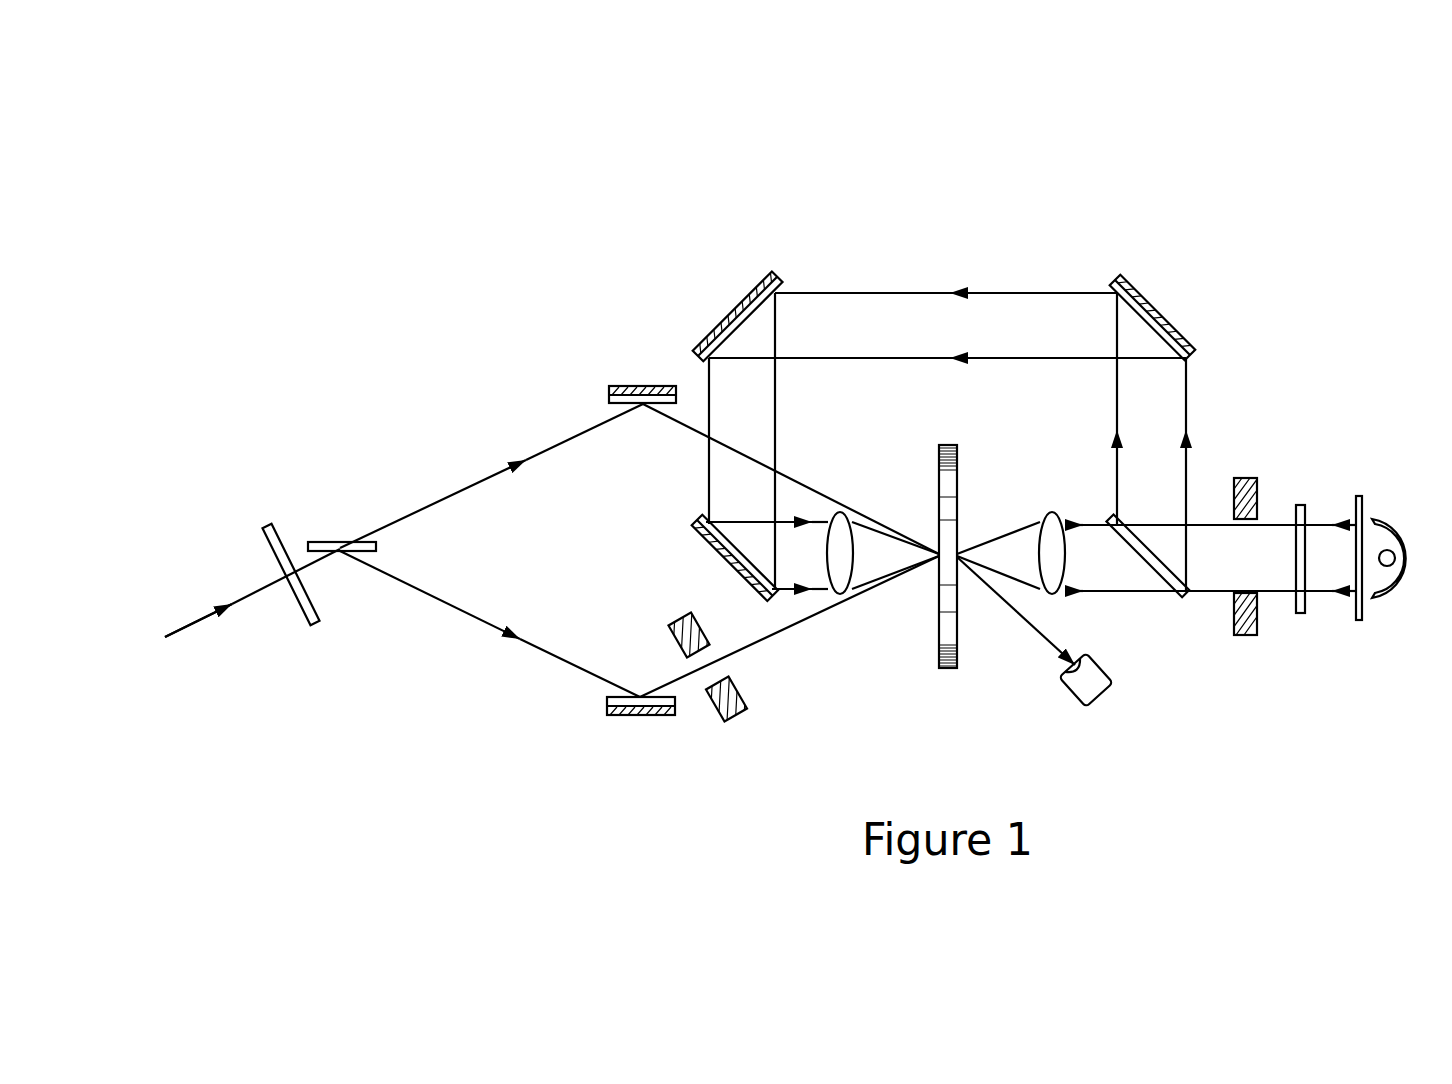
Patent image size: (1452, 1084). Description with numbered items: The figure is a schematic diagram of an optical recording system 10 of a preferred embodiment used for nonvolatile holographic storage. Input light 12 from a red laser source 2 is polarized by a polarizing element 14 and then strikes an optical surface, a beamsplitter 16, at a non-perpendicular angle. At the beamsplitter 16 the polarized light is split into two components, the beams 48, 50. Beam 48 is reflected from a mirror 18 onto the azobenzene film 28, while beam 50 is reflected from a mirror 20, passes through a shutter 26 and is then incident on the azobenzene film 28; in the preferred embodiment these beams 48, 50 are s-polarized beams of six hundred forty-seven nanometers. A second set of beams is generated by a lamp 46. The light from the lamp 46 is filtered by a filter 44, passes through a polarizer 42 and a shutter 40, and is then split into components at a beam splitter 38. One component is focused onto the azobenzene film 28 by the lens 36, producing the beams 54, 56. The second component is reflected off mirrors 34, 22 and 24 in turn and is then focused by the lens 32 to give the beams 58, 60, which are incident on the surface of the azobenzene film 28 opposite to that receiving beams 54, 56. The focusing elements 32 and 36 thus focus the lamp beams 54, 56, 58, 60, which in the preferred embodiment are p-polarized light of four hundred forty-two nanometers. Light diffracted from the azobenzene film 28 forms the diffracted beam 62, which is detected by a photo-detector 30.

The red laser source 2 is at (165, 637).
The optical system 10 is at (948, 218).
The input light 12 is at (200, 618).
The polarizing element 14 is at (312, 626).
The beamsplitter 16 is at (378, 546).
The mirror 18 is at (650, 383).
The mirror 20 is at (637, 717).
The mirror 22 is at (735, 311).
The mirror 24 is at (707, 541).
The shutter 26 is at (738, 723).
The azobenzene film 28 is at (943, 671).
The photo-detector 30 is at (1110, 695).
The lens 32 is at (838, 600).
The mirror 34 is at (1155, 311).
The lens 36 is at (1053, 515).
The beam splitter 38 is at (1184, 600).
The shutter 40 is at (1244, 642).
The polarizer 42 is at (1300, 503).
The filter 44 is at (1365, 624).
The lamp 46 is at (1409, 530).
The beam 48 is at (512, 464).
The beam 50 is at (483, 618).
The beam 54 is at (985, 540).
The beam 56 is at (1012, 582).
The beam 58 is at (862, 525).
The beam 60 is at (876, 578).
The diffracted beam 62 is at (1055, 656).